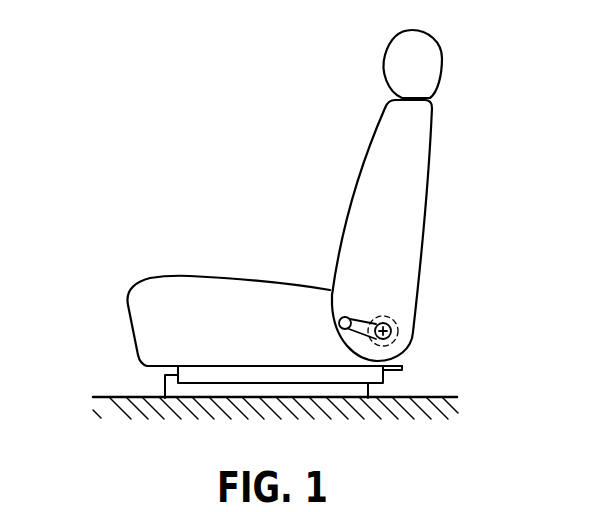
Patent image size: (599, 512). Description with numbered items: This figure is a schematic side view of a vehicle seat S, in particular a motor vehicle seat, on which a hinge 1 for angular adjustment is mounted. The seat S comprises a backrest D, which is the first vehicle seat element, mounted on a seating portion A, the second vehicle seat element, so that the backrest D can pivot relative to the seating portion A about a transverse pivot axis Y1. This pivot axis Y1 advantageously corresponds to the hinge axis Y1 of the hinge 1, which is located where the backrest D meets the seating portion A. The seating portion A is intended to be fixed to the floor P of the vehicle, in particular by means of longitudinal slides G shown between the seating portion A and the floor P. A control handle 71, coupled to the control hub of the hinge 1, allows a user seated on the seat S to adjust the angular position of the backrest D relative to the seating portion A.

The vehicle seat S is at (233, 167).
The seating portion A is at (192, 298).
The backrest D is at (408, 168).
The control handle 71 is at (339, 319).
The hinge 1 is at (407, 342).
The hinge axis Y1 is at (390, 323).
The longitudinal slides G is at (147, 375).
The floor P is at (132, 410).